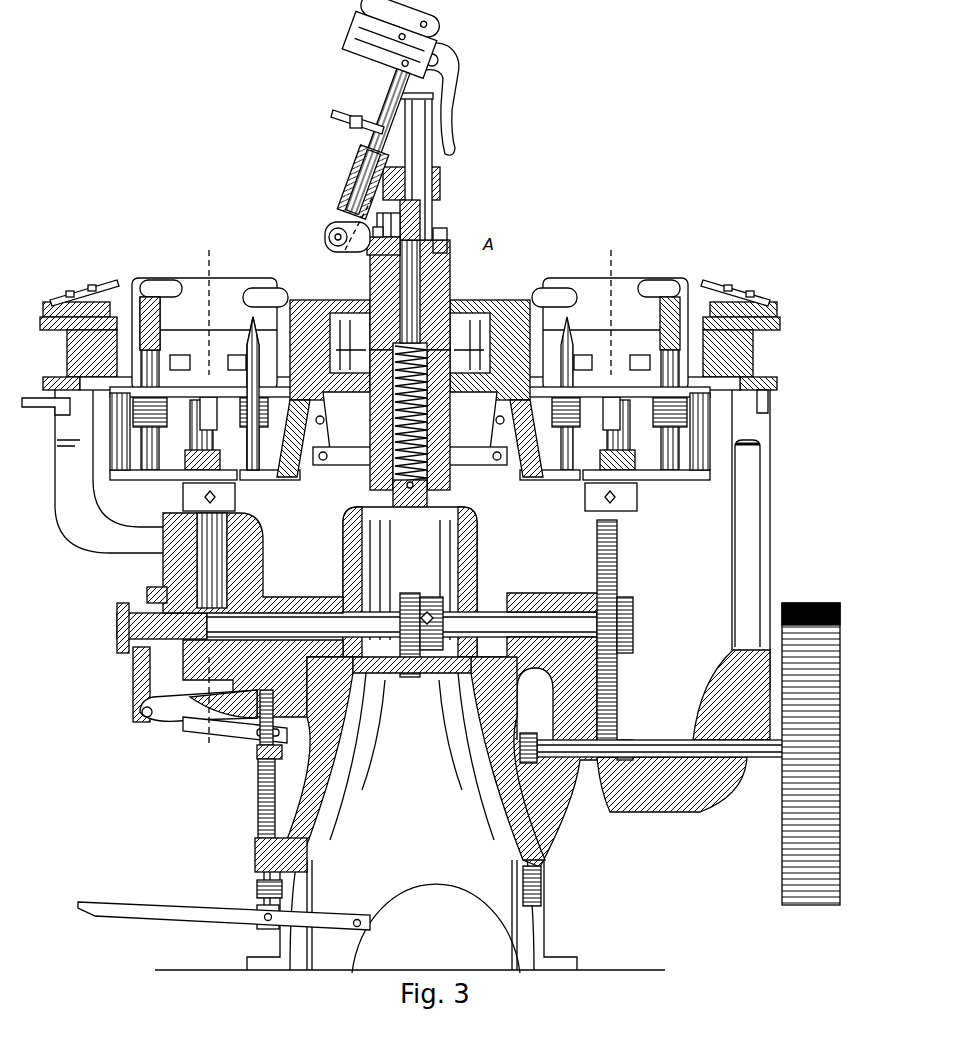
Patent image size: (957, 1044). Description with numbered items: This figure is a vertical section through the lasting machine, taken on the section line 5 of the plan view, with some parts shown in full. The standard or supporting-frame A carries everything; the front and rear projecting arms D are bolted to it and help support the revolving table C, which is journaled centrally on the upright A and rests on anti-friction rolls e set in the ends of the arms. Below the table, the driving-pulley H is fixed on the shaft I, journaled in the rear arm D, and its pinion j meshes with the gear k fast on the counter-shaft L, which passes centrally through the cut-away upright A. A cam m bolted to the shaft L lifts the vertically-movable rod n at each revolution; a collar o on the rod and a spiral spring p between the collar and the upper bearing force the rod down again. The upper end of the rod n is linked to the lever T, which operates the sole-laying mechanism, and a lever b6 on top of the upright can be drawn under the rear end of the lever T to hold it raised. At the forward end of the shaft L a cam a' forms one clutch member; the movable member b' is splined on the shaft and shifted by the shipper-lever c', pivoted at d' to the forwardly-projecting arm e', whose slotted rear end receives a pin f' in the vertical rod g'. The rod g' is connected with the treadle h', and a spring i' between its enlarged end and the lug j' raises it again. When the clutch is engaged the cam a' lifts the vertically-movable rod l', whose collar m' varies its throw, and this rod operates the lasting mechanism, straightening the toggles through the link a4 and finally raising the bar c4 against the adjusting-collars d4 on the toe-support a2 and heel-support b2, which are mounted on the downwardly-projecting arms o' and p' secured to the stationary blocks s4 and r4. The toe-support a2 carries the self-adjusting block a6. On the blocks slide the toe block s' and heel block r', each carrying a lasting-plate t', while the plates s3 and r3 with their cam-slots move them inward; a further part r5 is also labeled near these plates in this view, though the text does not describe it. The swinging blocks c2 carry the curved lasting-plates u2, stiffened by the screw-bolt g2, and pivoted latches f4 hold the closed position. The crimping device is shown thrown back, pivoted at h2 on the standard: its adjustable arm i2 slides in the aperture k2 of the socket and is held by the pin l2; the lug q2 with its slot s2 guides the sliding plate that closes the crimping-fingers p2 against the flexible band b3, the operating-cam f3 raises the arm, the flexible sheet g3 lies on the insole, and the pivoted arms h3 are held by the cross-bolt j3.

The lever T is at (413, 153).
The standard or supporting-frame A is at (451, 783).
The driving-pulley H is at (805, 603).
The counter-shaft L is at (492, 600).
The shaft I is at (670, 740).
The front and rear projecting arms D is at (733, 553).
The revolving table C is at (775, 385).
The gear k is at (617, 685).
The pinion j is at (609, 816).
The cam m is at (422, 614).
The vertically-movable rod n is at (410, 582).
The collar o is at (431, 510).
The spiral spring p is at (396, 369).
The anti-friction rolls e is at (411, 409).
The crimping-fingers p2 is at (412, 22).
The flexible band b3 is at (360, 56).
The operating-cam f3 is at (442, 52).
The lug or projection q2 is at (449, 72).
The pivoted arms h3 is at (335, 116).
The cross-bolt j3 is at (347, 128).
The pin l2 is at (345, 170).
The aperture k2 is at (358, 190).
The adjustable arm i2 is at (345, 191).
The pivot h2 is at (329, 237).
The plate s3 is at (395, 218).
The lever b6 is at (425, 246).
The toe-support a2 is at (160, 345).
The heel-support b2 is at (250, 345).
The swinging blocks c2 is at (222, 316).
The self-adjusting block a6 is at (160, 305).
The stationary block r4 is at (277, 345).
The rod r5 is at (311, 300).
The heel block r' is at (290, 266).
The flexible sheet of metal g3 is at (205, 380).
The link a4 is at (345, 430).
The adjusting-collars d4 is at (167, 415).
The pivoted latches f4 is at (190, 440).
The plate r3 is at (292, 445).
The downwardly-projecting arm o' is at (411, 425).
The bar c4 is at (170, 480).
The collar m' is at (251, 494).
The downwardly-projecting arm p' is at (403, 487).
The lasting-plate t' is at (411, 270).
The toe block s' is at (413, 287).
The slot s2 is at (412, 331).
The stationary block s4 is at (67, 352).
The lasting-plates u2 is at (442, 242).
The screw-bolt g2 is at (215, 268).
The vertically-movable rod l' is at (253, 560).
The movable clutch member b' is at (146, 584).
The shipper-lever c' is at (125, 684).
The cam a' is at (182, 684).
The pivot d' is at (177, 719).
The forwardly-projecting arm e' is at (223, 704).
The pin f' is at (247, 733).
The vertical rod g' is at (284, 758).
The spring i' is at (249, 799).
The lug j' is at (281, 836).
The treadle h' is at (224, 901).
The section line 5 is at (209, 499).